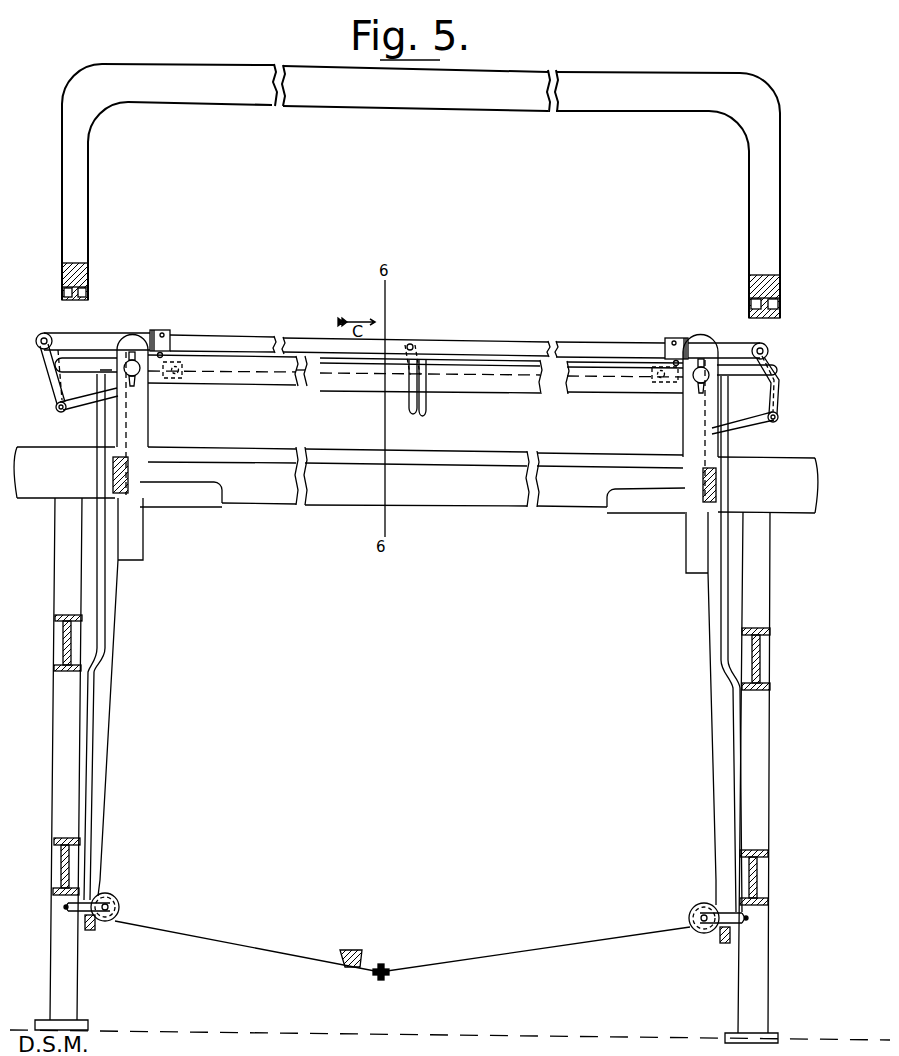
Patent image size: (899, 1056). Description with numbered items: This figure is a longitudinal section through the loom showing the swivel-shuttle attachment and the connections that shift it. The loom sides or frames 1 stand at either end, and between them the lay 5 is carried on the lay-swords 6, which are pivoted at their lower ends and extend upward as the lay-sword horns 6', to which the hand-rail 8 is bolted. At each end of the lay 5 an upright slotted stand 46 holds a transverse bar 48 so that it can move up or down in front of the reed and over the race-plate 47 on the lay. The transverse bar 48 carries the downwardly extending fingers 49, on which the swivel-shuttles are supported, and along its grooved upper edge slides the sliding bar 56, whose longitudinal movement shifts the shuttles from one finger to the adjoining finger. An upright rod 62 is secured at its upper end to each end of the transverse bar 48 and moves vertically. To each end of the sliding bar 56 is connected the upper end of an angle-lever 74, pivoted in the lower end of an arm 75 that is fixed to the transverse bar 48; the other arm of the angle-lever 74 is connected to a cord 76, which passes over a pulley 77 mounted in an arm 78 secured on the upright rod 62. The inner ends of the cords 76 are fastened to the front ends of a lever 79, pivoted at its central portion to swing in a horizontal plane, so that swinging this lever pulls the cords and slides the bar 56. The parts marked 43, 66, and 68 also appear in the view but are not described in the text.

The loom sides or frames 1 is at (65, 970).
The lay 5 is at (480, 500).
The lay-swords 6 is at (407, 701).
The lay-sword horns 6' is at (415, 419).
The hand-rail 8 is at (590, 384).
The pin 43 is at (408, 347).
The upright slotted stand 46 is at (145, 333).
The race-plate 47 is at (175, 444).
The transverse bar 48 is at (305, 375).
The fingers 49 is at (422, 410).
The sliding bar 56 is at (470, 345).
The upright rod 62 is at (93, 665).
The stop block 66 is at (97, 930).
The stop block 68 is at (722, 945).
The angle-lever 74 is at (48, 355).
The arm 75 is at (55, 395).
The cord 76 is at (108, 592).
The pulley 77 is at (122, 905).
The arm 78 is at (110, 896).
The lever 79 is at (388, 977).